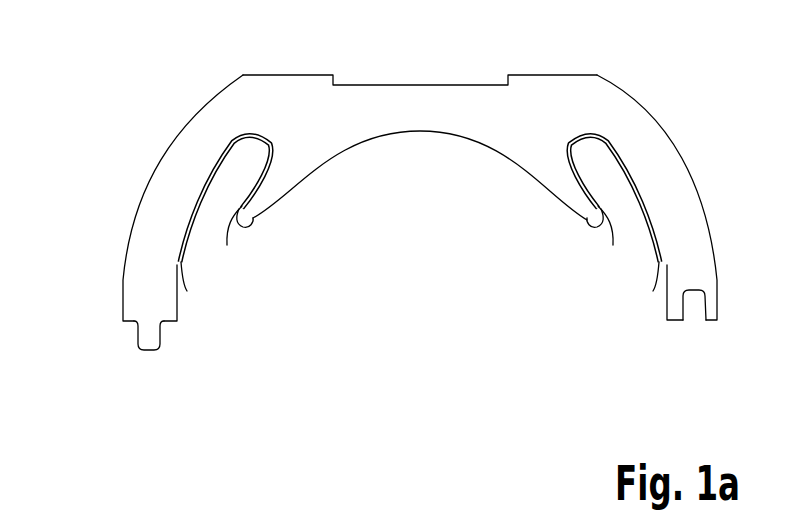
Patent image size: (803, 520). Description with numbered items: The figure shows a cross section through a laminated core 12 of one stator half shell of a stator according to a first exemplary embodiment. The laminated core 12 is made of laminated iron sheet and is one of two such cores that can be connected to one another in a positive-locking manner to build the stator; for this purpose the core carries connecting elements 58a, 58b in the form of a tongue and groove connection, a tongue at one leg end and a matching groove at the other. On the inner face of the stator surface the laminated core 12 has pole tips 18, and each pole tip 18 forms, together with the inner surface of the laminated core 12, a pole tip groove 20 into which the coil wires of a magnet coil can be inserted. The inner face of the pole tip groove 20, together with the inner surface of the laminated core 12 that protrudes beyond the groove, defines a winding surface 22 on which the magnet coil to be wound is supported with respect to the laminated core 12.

The laminated core 12 is at (146, 93).
The pole tip 18 is at (247, 220).
The pole tip groove 20 is at (623, 195).
The winding surface 22 is at (180, 258).
The connecting element 58a is at (150, 343).
The connecting element 58b is at (693, 298).